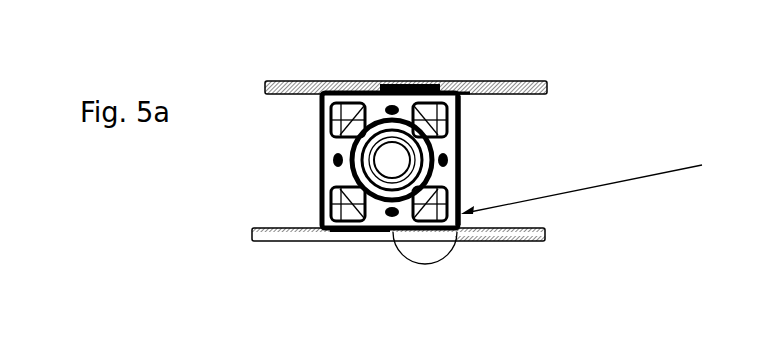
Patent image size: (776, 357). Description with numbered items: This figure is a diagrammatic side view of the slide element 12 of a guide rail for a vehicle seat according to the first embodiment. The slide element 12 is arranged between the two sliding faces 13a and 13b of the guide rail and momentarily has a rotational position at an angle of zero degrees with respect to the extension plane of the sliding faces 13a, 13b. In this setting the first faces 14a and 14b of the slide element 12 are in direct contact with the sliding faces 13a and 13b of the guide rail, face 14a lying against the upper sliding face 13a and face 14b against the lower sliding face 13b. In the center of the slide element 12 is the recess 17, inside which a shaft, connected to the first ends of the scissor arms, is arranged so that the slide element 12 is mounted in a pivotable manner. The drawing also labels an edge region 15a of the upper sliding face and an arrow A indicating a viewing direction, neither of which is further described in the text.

The slide element 12 is at (372, 93).
The sliding face 13a is at (530, 97).
The sliding face 13b is at (545, 233).
The first face 14a is at (405, 88).
The first face 14b is at (353, 232).
The upper plate end portion 15a is at (457, 92).
The recess 17 is at (462, 132).
The viewing direction arrow A is at (727, 165).